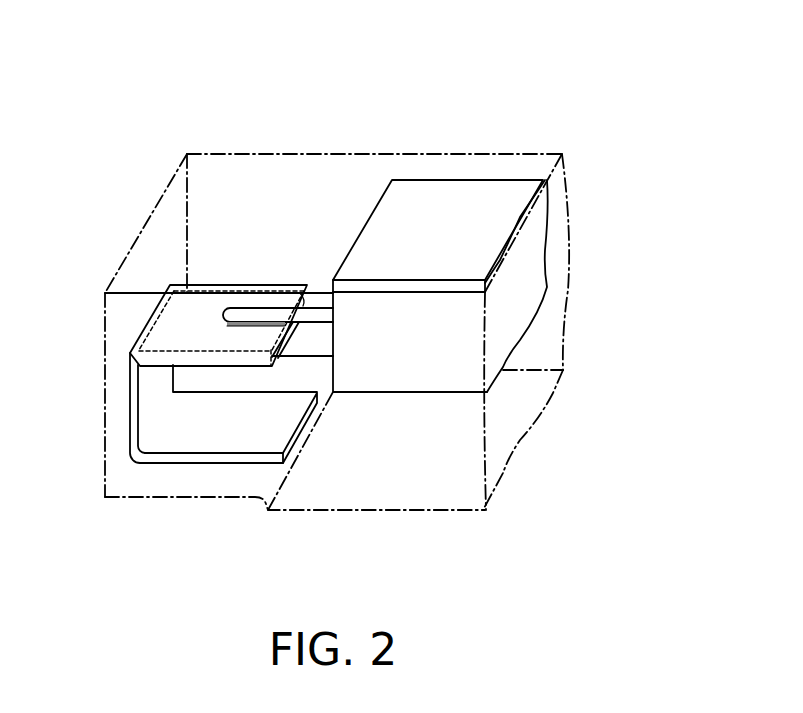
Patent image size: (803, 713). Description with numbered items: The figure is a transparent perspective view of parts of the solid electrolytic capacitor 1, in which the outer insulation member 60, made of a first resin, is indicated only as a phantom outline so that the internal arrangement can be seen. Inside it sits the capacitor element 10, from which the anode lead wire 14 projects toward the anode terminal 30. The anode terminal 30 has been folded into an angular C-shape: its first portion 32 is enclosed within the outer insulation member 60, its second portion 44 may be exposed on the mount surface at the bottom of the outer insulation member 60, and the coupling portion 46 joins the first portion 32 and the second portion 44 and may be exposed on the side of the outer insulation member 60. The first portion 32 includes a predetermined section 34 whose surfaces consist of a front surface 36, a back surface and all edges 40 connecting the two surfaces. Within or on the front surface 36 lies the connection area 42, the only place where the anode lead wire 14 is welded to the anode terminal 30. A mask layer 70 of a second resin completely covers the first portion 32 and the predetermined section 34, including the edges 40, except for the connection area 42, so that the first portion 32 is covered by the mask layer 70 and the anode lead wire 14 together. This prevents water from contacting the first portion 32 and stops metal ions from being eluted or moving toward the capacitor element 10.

The solid electrolytic capacitor 1 is at (403, 110).
The capacitor element 10 is at (468, 198).
The anode lead wire 14 is at (323, 316).
The anode terminal 30 is at (207, 427).
The first portion 32 is at (160, 353).
The predetermined section 34 is at (258, 370).
The front surface 36 is at (217, 303).
The edges 40 is at (202, 358).
The connection area 42 is at (247, 325).
The second portion 44 is at (175, 462).
The coupling portion 46 is at (130, 432).
The outer insulation member 60 is at (222, 170).
The mask layer 70 is at (168, 317).